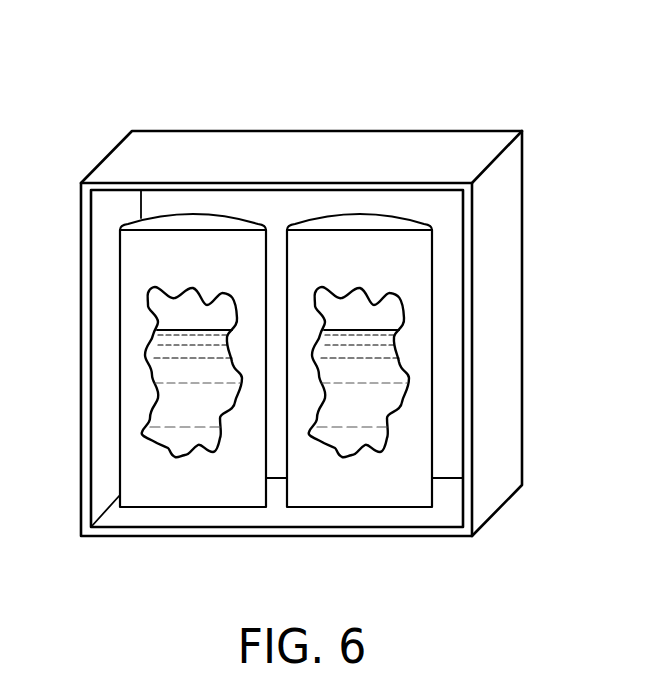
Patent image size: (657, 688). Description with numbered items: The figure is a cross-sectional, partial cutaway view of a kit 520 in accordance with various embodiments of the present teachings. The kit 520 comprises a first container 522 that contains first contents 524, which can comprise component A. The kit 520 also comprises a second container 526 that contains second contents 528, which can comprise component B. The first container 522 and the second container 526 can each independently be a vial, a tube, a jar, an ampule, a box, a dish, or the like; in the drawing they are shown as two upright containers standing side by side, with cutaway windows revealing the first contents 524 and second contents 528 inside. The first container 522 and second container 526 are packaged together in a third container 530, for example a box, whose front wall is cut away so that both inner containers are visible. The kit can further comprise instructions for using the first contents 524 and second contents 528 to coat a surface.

The kit 520 is at (158, 103).
The first container 522 is at (191, 487).
The first contents 524 is at (160, 372).
The second container 526 is at (357, 487).
The second contents 528 is at (373, 402).
The third container 530 is at (502, 242).